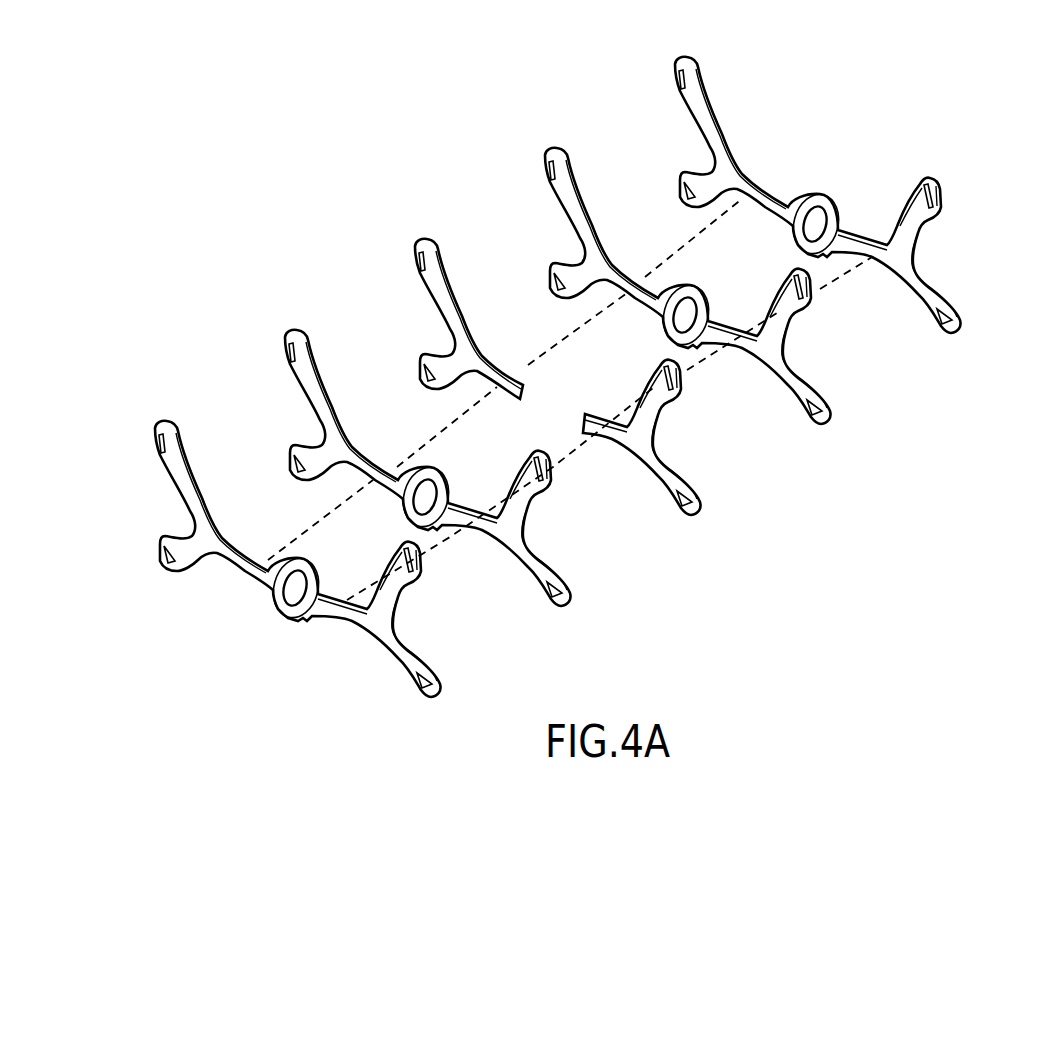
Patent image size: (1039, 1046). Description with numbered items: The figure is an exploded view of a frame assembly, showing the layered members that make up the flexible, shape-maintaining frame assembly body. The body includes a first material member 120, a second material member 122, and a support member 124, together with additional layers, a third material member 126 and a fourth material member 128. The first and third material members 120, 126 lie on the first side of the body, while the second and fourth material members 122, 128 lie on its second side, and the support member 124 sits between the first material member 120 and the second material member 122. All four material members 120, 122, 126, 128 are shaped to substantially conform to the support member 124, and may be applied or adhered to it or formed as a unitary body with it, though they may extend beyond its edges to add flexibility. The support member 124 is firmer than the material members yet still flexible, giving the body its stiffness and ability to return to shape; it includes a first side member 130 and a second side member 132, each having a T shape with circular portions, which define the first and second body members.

The first material member 120 is at (805, 358).
The second material member 122 is at (537, 546).
The support member 124 is at (703, 462).
The third material member 126 is at (947, 272).
The fourth material member 128 is at (407, 637).
The first side member 130 is at (603, 415).
The second side member 132 is at (516, 378).